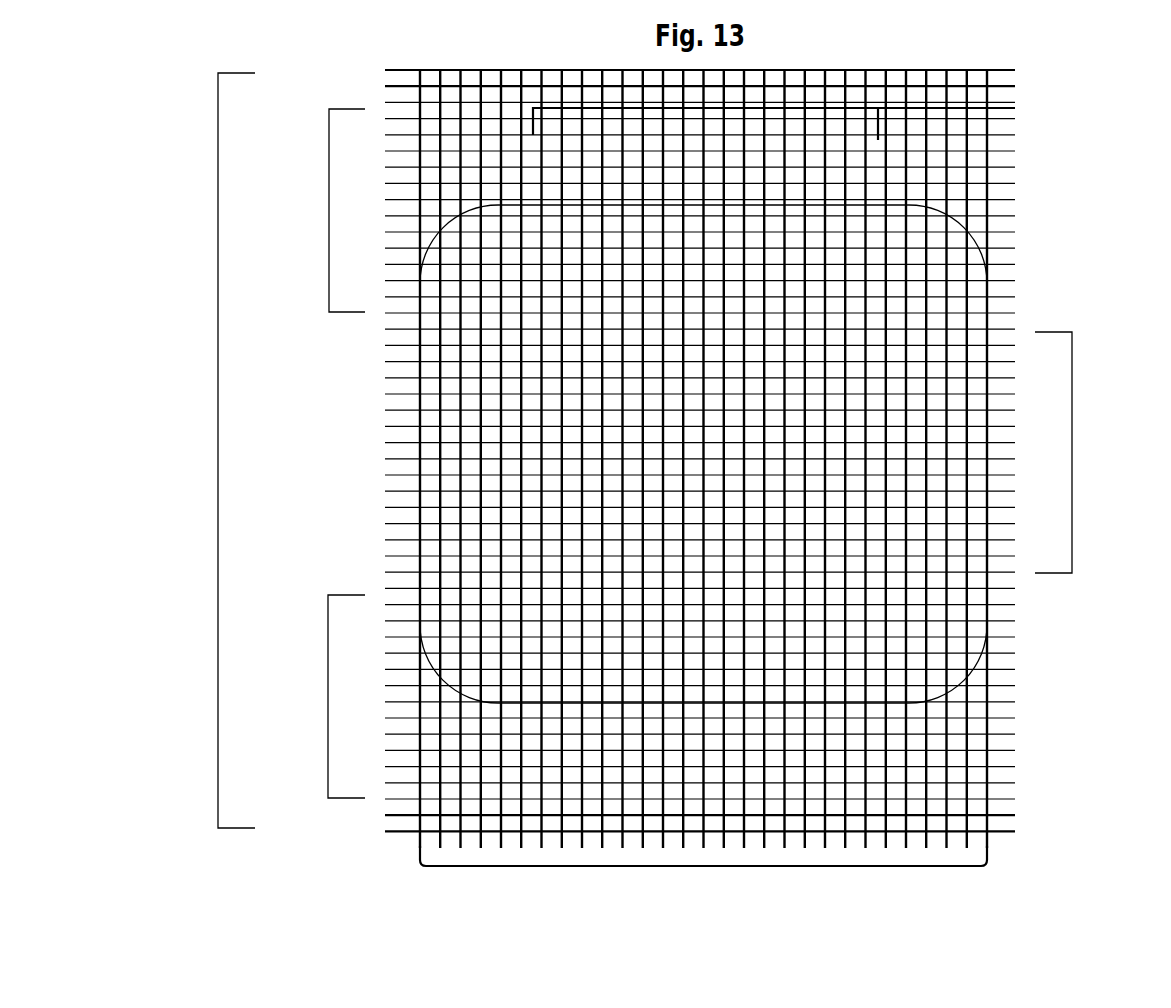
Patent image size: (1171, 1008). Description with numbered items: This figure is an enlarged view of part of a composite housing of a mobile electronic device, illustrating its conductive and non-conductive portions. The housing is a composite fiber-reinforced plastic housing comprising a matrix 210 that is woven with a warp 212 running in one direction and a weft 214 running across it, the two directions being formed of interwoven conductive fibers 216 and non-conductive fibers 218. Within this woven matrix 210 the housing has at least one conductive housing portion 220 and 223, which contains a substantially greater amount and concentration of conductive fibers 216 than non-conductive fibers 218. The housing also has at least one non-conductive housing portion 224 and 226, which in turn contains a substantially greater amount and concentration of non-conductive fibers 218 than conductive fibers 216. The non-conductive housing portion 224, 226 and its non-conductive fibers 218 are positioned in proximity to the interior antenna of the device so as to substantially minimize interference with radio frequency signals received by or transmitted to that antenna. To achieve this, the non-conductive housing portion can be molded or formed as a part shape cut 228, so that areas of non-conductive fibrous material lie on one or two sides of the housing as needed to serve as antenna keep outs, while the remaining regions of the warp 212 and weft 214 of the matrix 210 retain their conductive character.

The matrix 210 is at (405, 443).
The warp 212 is at (182, 340).
The weft 214 is at (1015, 852).
The conductive fibers 216 is at (1073, 417).
The non-conductive fibers 218 is at (983, 188).
The conductive housing portion 220 is at (1015, 413).
The conductive housing portion 223 is at (1015, 110).
The non-conductive housing portion 224 is at (329, 250).
The non-conductive housing portion 226 is at (328, 670).
The part shape cut 228 is at (975, 677).